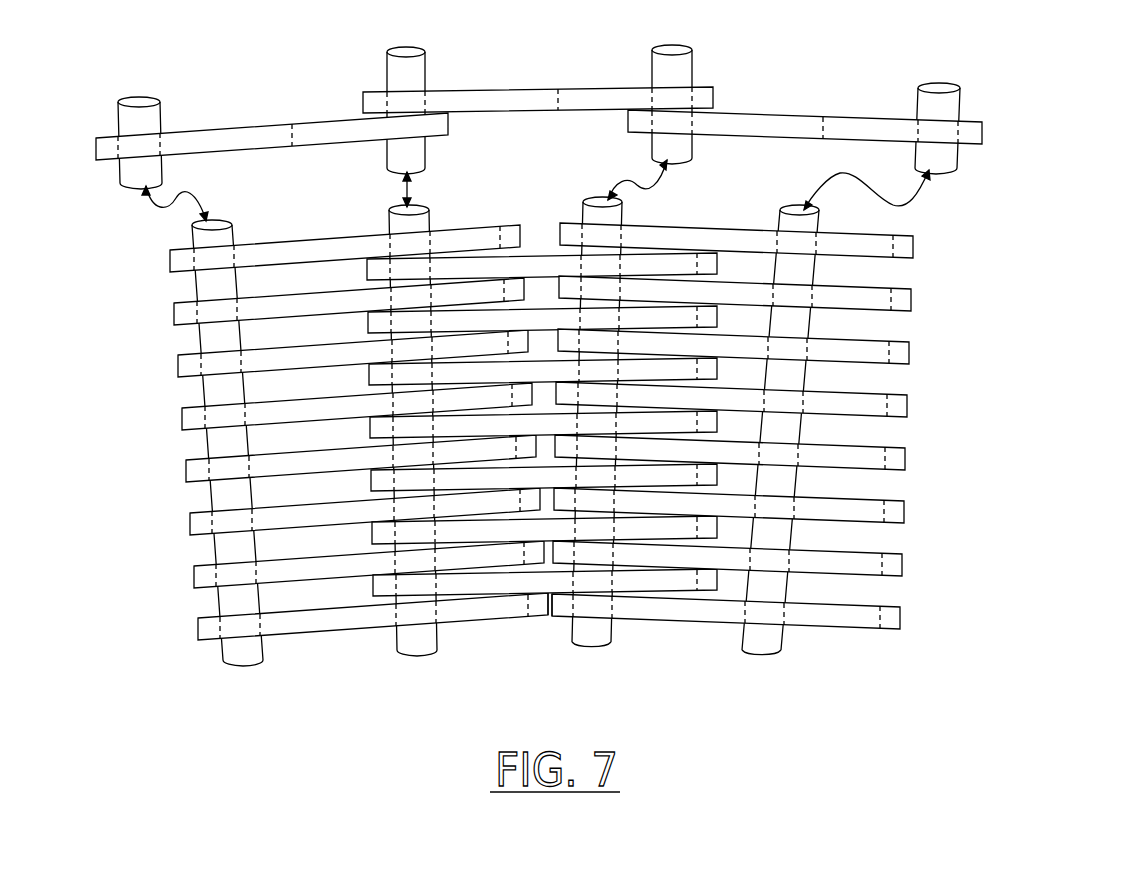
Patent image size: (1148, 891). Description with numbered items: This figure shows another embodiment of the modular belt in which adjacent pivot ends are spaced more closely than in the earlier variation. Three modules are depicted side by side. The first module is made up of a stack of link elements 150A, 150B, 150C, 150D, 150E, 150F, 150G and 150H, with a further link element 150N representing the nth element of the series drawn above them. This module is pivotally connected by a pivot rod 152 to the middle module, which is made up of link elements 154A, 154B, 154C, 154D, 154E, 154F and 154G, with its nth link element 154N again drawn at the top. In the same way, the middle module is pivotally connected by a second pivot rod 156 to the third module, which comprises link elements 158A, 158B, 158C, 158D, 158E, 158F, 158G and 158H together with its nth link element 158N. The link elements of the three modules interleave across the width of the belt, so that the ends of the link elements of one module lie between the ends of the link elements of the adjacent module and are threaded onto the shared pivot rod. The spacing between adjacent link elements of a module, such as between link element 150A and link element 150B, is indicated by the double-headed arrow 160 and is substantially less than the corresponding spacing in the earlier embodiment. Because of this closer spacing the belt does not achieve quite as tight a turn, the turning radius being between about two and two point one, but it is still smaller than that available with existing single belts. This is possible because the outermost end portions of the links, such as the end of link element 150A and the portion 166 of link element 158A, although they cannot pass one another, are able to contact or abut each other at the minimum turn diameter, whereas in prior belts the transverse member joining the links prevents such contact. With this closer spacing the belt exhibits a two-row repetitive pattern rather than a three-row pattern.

The link element 150N is at (96, 138).
The link element 154N is at (363, 103).
The link element 158N is at (978, 122).
The link element 150H is at (170, 260).
The link element 150G is at (174, 313).
The link element 150F is at (178, 365).
The link element 150E is at (182, 418).
The link element 150D is at (186, 470).
The link element 150C is at (190, 523).
The link element 150B is at (194, 576).
The link element 150A is at (198, 628).
The link element 154G is at (367, 263).
The link element 154F is at (368, 316).
The link element 154E is at (369, 368).
The link element 154D is at (370, 421).
The link element 154C is at (371, 474).
The link element 154B is at (372, 526).
The link element 154A is at (373, 579).
The link element 158H is at (913, 248).
The link element 158G is at (911, 301).
The link element 158F is at (909, 354).
The link element 158E is at (907, 407).
The link element 158D is at (905, 460).
The link element 158C is at (904, 513).
The link element 158B is at (902, 566).
The link element 158A is at (900, 619).
The pivot rod 152 is at (407, 653).
The pivot rod 156 is at (605, 630).
The double-headed arrow 160 is at (535, 610).
The portion of link element 166 is at (558, 605).